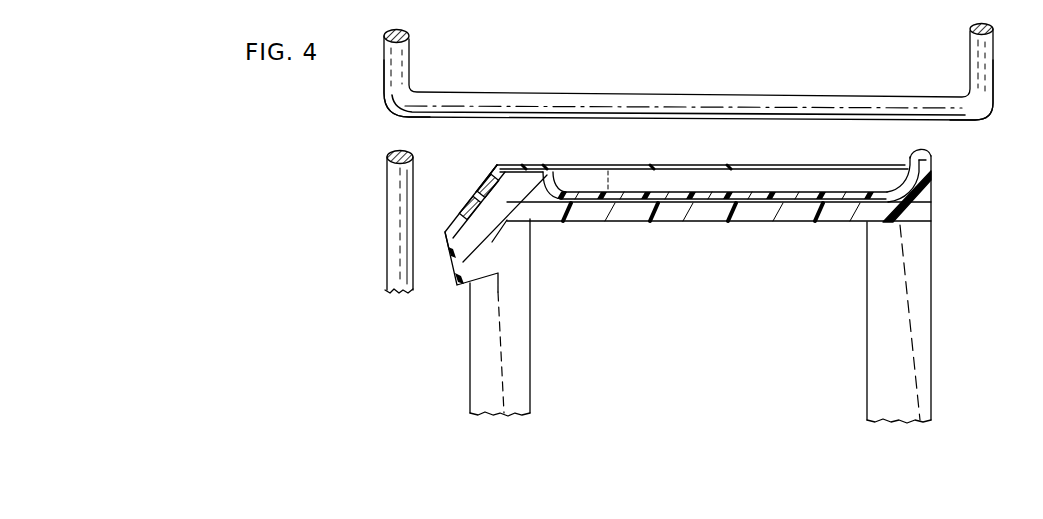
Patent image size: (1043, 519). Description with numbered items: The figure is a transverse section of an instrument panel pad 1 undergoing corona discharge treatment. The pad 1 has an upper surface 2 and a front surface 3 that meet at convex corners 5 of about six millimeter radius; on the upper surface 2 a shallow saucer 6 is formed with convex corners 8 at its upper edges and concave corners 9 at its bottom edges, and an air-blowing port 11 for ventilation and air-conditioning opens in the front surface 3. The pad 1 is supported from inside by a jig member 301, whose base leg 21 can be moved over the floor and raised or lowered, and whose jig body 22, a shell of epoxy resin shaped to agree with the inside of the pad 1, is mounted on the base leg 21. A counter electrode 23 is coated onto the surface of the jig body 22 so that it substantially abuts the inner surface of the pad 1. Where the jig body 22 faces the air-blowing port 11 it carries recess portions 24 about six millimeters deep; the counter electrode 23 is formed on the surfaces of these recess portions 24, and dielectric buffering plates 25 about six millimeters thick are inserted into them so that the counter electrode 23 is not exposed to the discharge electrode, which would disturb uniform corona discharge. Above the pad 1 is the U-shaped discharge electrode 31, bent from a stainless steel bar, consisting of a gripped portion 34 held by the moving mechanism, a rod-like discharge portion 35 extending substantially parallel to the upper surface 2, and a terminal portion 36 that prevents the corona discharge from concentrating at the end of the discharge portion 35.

The instrument panel pad 1 is at (658, 163).
The upper surface 2 is at (733, 167).
The front surface 3 is at (449, 227).
The convex corners 5 is at (488, 178).
The shallow saucer 6 is at (763, 191).
The convex corners 8 is at (555, 171).
The concave corners 9 is at (562, 180).
The air-blowing port 11 is at (484, 180).
The base leg 21 is at (472, 345).
The jig body 22 is at (671, 221).
The counter electrode 23 is at (741, 205).
The recess portions 24 is at (461, 207).
The buffering plates 25 is at (476, 194).
The discharge electrode 31 is at (519, 91).
The gripped portion 34 is at (993, 56).
The rod-like discharge portion 35 is at (636, 100).
The terminal portion 36 is at (385, 74).
The jig member 301 is at (669, 274).